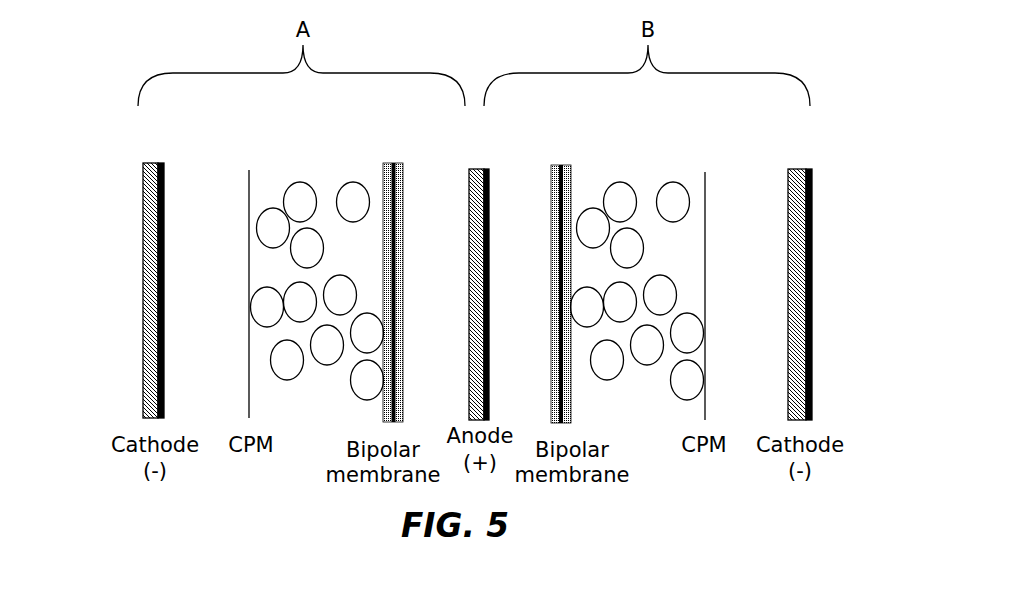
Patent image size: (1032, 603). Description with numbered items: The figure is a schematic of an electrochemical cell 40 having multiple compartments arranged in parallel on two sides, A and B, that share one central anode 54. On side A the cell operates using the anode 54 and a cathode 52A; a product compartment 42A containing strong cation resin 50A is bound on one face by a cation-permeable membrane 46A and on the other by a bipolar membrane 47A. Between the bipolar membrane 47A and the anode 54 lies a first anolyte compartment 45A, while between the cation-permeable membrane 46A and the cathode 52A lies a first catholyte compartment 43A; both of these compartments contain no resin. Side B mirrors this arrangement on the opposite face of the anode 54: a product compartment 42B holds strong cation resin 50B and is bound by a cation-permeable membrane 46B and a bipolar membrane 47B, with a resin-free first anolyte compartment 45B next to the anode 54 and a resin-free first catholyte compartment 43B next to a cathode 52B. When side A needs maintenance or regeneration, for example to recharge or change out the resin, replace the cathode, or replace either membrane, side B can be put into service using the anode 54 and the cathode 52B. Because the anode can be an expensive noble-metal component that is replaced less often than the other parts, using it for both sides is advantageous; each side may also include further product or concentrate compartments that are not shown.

The electrochemical cell 40 is at (124, 230).
The product compartment 42A is at (296, 175).
The product compartment 42B is at (616, 175).
The first catholyte compartment 43A is at (209, 173).
The first catholyte compartment 43B is at (753, 173).
The first anolyte compartment 45A is at (442, 173).
The first anolyte compartment 45B is at (523, 173).
The cation-permeable membrane 46A is at (248, 267).
The cation-permeable membrane 46B is at (706, 308).
The bipolar membrane 47A is at (403, 307).
The bipolar membrane 47B is at (551, 244).
The strong cation resin 50A is at (351, 190).
The strong cation resin 50B is at (671, 190).
The cathode 52A is at (144, 352).
The cathode 52B is at (812, 308).
The anode 54 is at (490, 307).